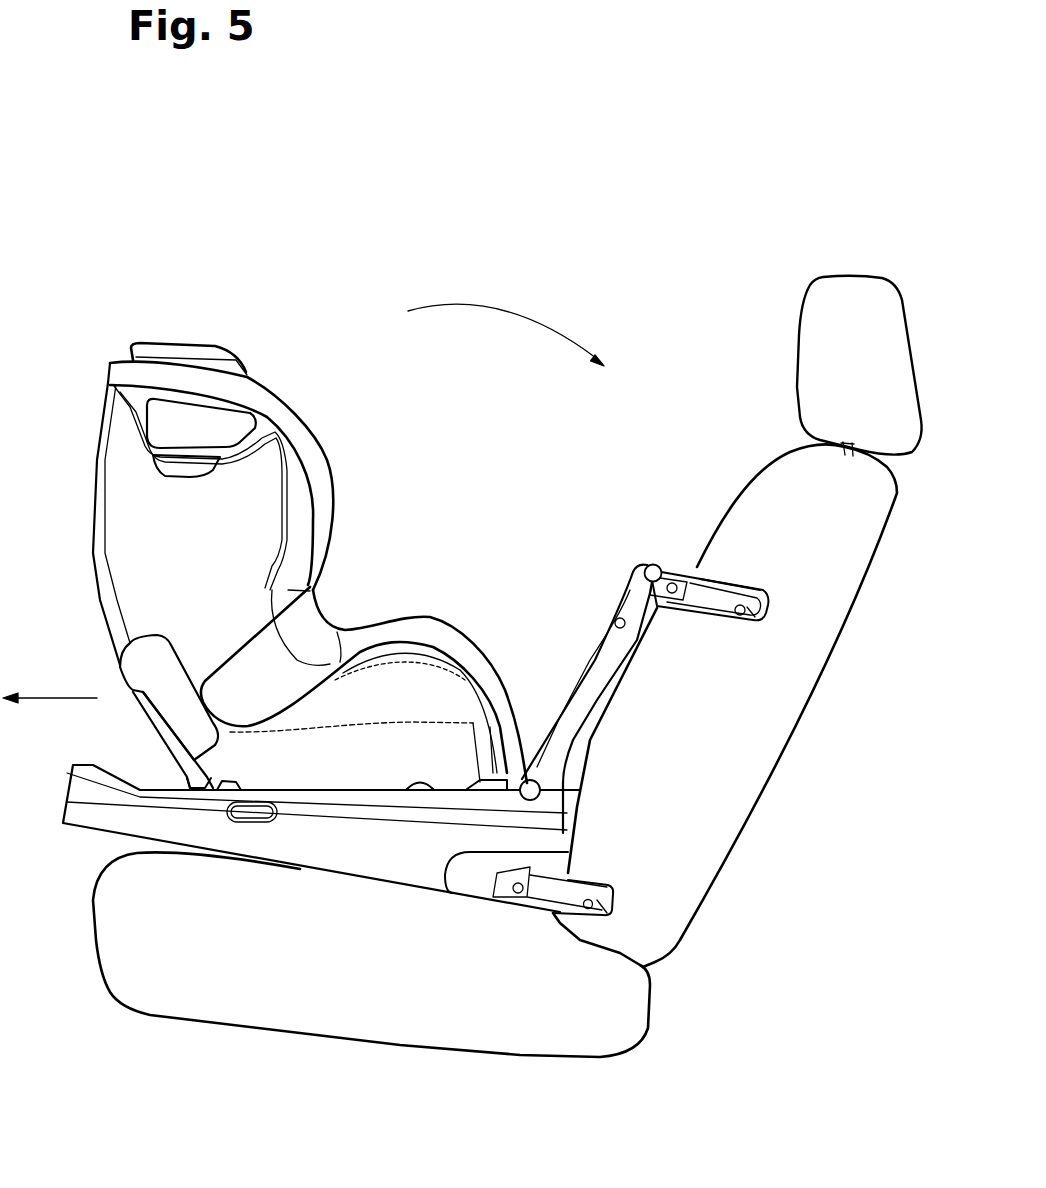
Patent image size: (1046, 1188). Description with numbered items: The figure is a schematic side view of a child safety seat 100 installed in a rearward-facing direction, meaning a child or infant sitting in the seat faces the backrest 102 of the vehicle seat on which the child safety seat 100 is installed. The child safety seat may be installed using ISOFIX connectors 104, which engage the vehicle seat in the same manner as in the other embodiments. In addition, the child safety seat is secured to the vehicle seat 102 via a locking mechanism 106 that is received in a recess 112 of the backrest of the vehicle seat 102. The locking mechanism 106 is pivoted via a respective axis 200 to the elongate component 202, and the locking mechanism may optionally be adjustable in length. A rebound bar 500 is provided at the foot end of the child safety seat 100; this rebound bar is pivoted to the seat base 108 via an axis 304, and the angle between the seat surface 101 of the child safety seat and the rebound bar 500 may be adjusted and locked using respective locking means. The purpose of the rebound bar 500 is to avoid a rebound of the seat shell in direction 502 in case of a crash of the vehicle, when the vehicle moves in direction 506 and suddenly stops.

The child safety seat 100 is at (312, 396).
The seat surface 101 is at (380, 720).
The backrest of the vehicle seat 102 is at (788, 677).
The ISOFIX connectors 104 is at (543, 893).
The locking mechanism 106 is at (728, 598).
The seat base 108 is at (72, 805).
The recess 112 is at (720, 575).
The axis 200 is at (653, 564).
The elongate component 202 is at (628, 600).
The axis 304 is at (540, 795).
The rebound bar 500 is at (597, 680).
The rebound direction 502 is at (503, 308).
The vehicle travel direction 506 is at (62, 697).